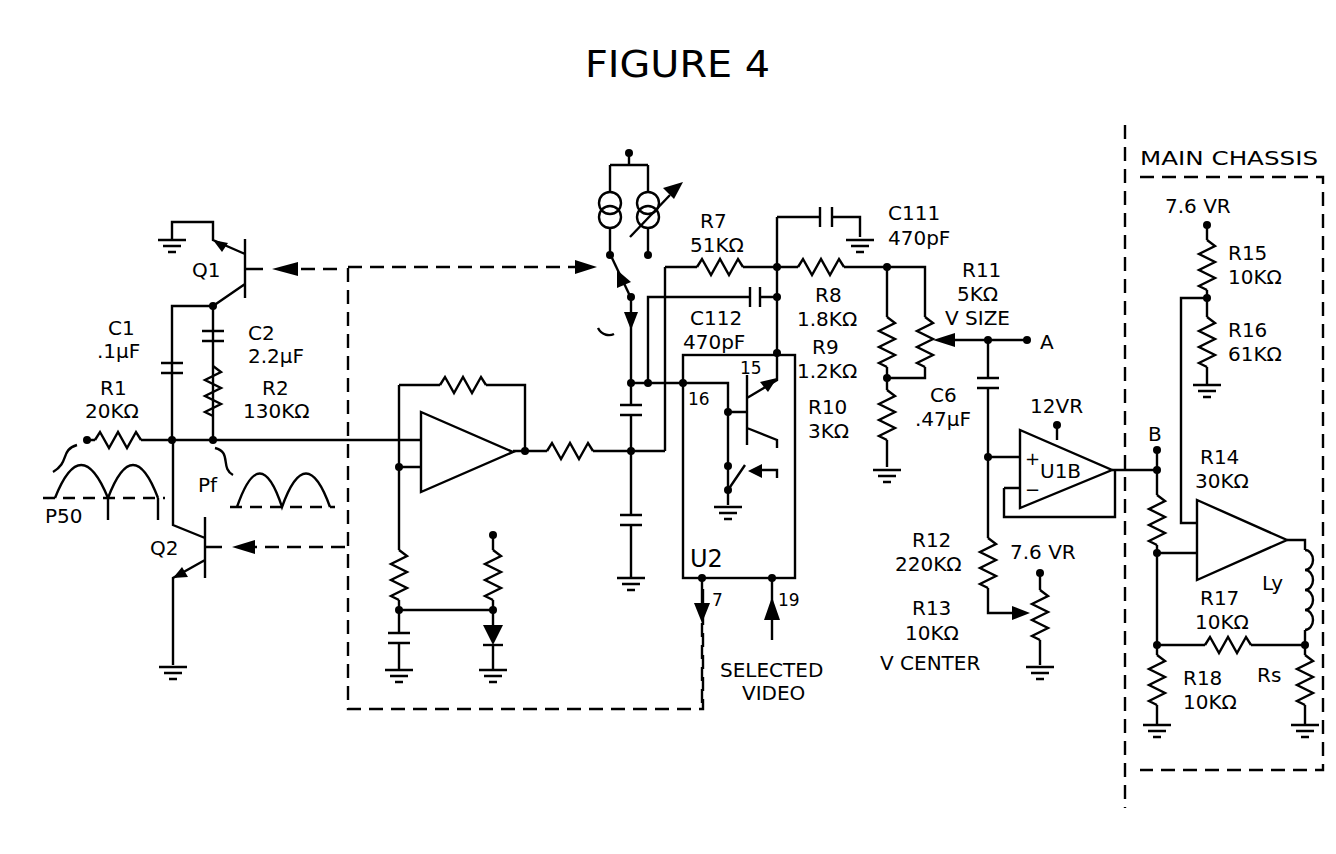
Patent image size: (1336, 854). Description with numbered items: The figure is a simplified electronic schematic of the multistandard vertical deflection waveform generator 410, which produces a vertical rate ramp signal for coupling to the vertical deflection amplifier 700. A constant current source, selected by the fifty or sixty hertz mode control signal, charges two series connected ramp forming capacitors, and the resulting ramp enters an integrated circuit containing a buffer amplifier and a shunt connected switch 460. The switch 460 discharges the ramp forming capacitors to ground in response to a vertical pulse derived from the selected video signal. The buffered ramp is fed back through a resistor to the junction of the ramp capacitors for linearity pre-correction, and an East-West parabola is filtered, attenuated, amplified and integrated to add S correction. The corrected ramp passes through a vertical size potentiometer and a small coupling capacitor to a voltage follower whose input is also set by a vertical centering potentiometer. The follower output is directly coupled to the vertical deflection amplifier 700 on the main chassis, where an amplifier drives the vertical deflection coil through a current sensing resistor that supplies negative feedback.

The vertical deflection waveform generator 410 is at (597, 767).
The shunt connected switch 460 is at (751, 504).
The vertical deflection amplifier 700 is at (1310, 518).